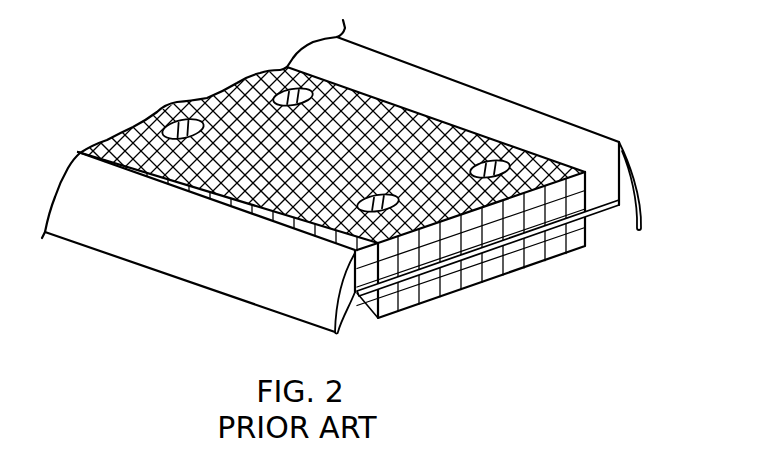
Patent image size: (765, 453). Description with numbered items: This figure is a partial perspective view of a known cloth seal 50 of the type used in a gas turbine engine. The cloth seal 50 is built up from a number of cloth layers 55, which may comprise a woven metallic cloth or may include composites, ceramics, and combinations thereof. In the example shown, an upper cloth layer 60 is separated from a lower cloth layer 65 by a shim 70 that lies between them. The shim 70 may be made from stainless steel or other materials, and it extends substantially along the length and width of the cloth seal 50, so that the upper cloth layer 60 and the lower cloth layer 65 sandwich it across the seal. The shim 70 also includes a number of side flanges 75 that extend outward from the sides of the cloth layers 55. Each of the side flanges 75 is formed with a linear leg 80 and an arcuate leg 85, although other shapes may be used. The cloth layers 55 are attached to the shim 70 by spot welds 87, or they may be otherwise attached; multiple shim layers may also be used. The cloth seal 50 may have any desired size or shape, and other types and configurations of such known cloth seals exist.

The cloth seal 50 is at (146, 91).
The cloth layers 55 is at (207, 97).
The upper cloth layer 60 is at (271, 72).
The lower cloth layer 65 is at (420, 297).
The shim 70 is at (463, 263).
The side flanges 75 is at (98, 256).
The linear leg 80 is at (510, 120).
The arcuate leg 85 is at (242, 282).
The spot welds 87 is at (160, 120).